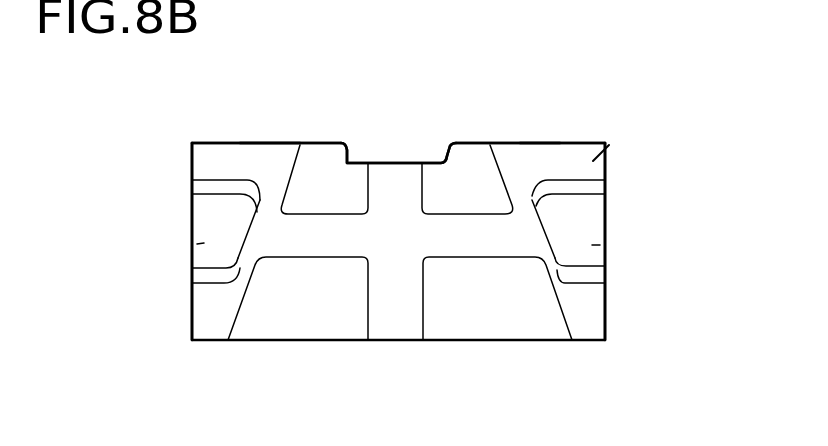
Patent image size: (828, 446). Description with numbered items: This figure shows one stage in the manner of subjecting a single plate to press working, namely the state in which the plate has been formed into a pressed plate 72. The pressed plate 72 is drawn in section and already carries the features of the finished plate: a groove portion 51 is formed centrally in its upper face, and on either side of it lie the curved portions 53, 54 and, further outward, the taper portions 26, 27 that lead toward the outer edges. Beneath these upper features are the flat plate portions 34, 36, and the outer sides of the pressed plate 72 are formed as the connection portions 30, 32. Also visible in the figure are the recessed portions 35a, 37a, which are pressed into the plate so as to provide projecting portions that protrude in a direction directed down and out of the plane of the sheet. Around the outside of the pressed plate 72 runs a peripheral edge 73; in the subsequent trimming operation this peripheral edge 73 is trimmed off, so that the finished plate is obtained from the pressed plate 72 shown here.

The taper portion 27 is at (232, 150).
The curved portion 54 is at (270, 152).
The recessed portion 37a is at (316, 230).
The groove portion 51 is at (397, 183).
The recessed portion 35a is at (475, 230).
The curved portion 53 is at (538, 153).
The taper portion 26 is at (566, 150).
The pressed plate 72 is at (607, 148).
The peripheral edge 73 is at (607, 187).
The connection portion 30 is at (610, 246).
The connection portion 32 is at (188, 250).
The flat plate portion 36 is at (297, 330).
The flat plate portion 34 is at (505, 330).